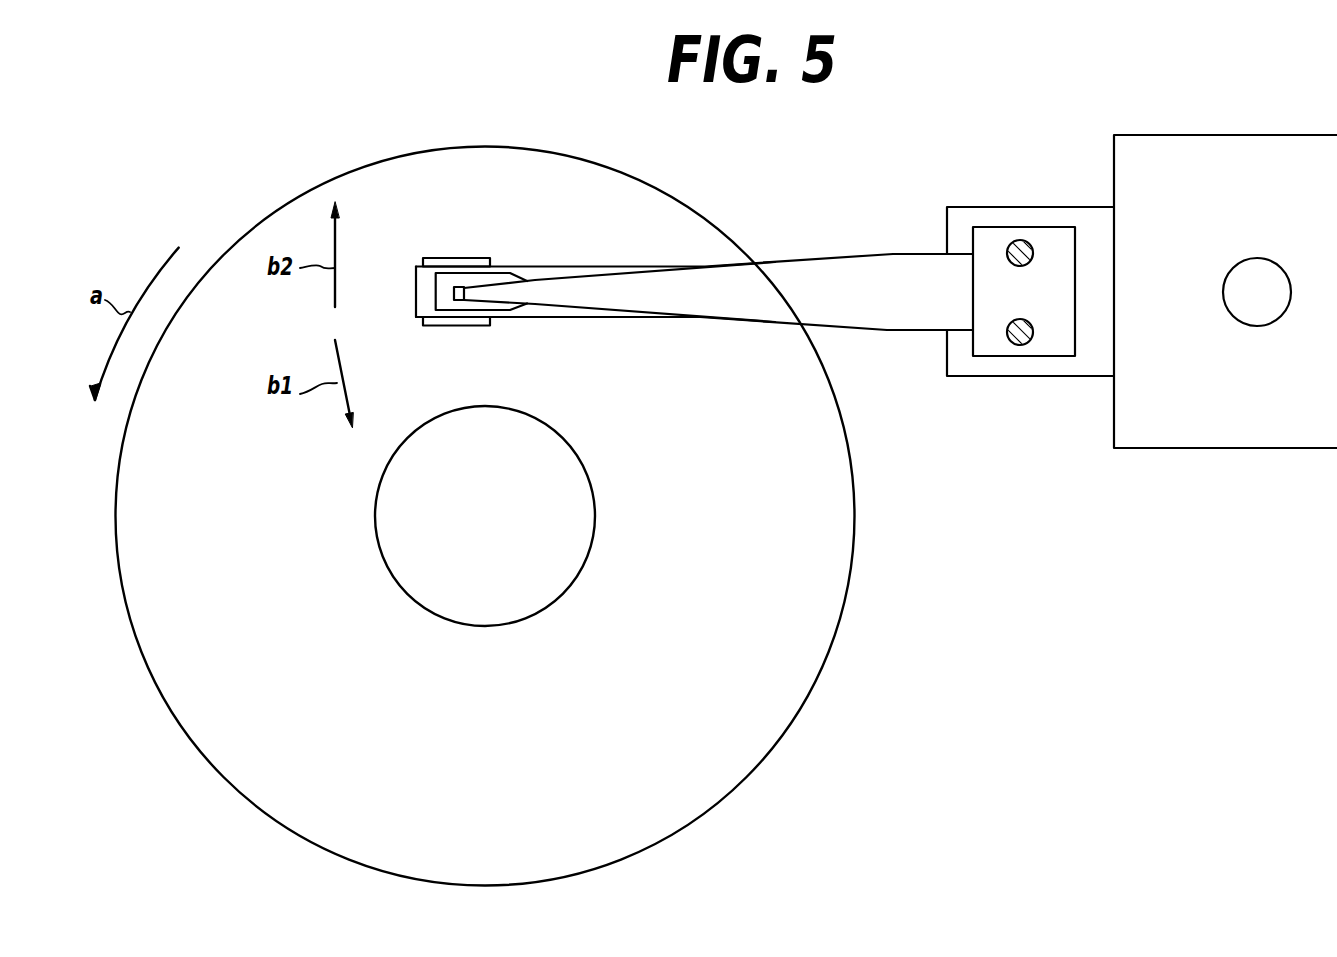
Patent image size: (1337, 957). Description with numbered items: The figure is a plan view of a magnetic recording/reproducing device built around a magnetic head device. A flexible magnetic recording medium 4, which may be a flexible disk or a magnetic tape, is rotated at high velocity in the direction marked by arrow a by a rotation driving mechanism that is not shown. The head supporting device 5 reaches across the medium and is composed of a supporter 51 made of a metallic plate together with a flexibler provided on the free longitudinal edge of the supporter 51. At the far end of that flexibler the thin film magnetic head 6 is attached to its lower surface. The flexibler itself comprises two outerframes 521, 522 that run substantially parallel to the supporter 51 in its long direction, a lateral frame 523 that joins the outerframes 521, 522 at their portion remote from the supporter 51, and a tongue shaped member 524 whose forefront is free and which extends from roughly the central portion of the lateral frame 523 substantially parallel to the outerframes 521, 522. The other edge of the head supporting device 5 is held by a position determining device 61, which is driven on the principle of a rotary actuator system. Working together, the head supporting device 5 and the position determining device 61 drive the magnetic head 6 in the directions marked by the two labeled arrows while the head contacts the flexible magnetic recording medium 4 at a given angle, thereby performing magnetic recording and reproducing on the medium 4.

The flexible magnetic recording medium 4 is at (780, 682).
The head supporting device 5 is at (825, 251).
The magnetic head 6 is at (443, 291).
The supporter 51 is at (867, 330).
The position determining device 61 is at (1251, 428).
The outerframe 521 is at (467, 310).
The outerframe 522 is at (452, 273).
The lateral frame 523 is at (427, 281).
The tongue shaped member 524 is at (442, 295).